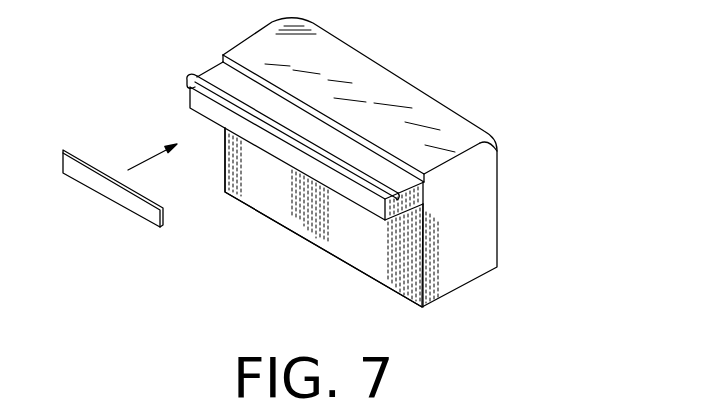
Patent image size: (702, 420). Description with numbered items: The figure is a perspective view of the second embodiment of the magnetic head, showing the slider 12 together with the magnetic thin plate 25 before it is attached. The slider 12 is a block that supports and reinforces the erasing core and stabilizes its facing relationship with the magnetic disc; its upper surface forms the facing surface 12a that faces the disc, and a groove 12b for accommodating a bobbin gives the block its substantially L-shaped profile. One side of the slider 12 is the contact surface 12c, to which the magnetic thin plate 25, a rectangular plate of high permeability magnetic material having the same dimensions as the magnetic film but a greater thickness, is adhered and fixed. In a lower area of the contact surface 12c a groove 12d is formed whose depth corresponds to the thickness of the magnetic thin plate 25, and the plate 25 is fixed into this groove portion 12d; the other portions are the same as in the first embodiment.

The slider 12 is at (475, 218).
The facing surface 12a is at (392, 80).
The groove 12b is at (308, 230).
The contact surface 12c is at (186, 83).
The groove 12d is at (192, 105).
The magnetic thin plate 25 is at (120, 195).